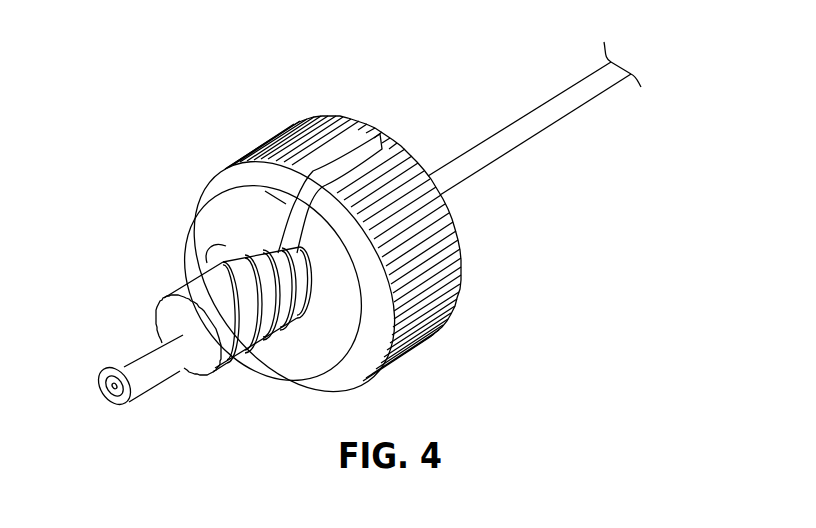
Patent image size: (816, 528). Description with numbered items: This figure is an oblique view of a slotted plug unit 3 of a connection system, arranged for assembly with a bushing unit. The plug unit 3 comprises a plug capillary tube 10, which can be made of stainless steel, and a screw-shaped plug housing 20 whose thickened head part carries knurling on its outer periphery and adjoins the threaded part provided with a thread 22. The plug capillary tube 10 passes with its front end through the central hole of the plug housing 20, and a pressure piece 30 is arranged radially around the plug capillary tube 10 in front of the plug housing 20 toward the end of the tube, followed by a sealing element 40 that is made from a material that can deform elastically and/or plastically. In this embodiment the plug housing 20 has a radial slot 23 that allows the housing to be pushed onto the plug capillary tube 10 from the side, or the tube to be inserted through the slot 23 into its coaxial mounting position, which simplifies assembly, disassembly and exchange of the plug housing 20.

The plug unit 3 is at (512, 304).
The plug capillary tube 10 is at (510, 127).
The plug housing 20 is at (469, 263).
The thread 22 is at (216, 246).
The radial slot 23 is at (380, 145).
The pressure piece 30 is at (150, 348).
The sealing element 40 is at (115, 367).